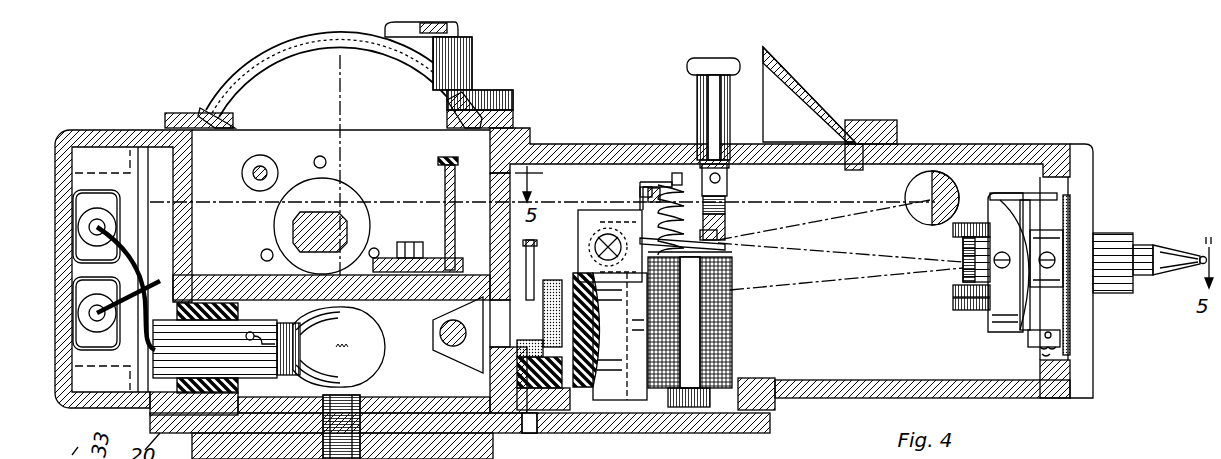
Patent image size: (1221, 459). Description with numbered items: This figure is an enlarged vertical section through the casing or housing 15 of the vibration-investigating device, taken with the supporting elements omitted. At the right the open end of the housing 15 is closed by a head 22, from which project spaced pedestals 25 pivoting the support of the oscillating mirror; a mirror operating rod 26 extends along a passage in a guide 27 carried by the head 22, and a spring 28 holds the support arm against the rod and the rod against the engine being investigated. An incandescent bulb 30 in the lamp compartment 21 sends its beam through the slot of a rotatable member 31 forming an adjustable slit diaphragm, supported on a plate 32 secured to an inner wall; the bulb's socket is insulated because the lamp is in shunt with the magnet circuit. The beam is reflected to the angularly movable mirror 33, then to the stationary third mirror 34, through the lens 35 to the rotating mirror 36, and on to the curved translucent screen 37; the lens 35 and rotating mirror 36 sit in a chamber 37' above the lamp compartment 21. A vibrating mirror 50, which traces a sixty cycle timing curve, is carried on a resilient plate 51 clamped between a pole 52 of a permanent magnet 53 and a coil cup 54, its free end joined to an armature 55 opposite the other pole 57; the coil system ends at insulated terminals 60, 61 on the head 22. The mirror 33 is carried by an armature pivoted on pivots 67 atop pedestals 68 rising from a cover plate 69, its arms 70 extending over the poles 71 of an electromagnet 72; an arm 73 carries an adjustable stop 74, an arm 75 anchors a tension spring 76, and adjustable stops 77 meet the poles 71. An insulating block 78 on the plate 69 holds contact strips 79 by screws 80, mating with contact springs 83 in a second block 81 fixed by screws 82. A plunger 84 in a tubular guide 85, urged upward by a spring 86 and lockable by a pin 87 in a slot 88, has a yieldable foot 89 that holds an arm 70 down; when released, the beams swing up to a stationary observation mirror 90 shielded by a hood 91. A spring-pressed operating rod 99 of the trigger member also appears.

The casing or housing 15 is at (541, 137).
The lamp compartment 21 is at (562, 294).
The head 22 is at (1093, 162).
The pedestals 25 is at (977, 226).
The mirror operating rod 26 is at (1201, 258).
The guide 27 is at (1143, 253).
The spring 28 is at (948, 308).
The incandescent bulb 30 is at (367, 337).
The rotatable member 31 is at (440, 327).
The plate 32 is at (483, 347).
The angularly movable mirror 33 is at (640, 192).
The third mirror 34 is at (928, 176).
The lens 35 is at (447, 185).
The rotating mirror 36 is at (297, 219).
The curved translucent screen 37 is at (359, 75).
The chamber 37' is at (173, 123).
The vibrating mirror 50 is at (965, 248).
The resilient plate 51 is at (967, 267).
The pole 52 is at (1000, 245).
The permanent magnet 53 is at (1013, 332).
The coil cup 54 is at (1010, 240).
The armature 55 is at (1030, 262).
The pole 57 is at (1052, 273).
The insulated terminal 60 is at (1060, 333).
The insulated terminal 61 is at (1053, 247).
The pivots 67 is at (604, 243).
The pedestals 68 is at (593, 210).
The cover plate 69 is at (771, 422).
The arms 70 is at (718, 252).
The poles 71 is at (728, 264).
The electromagnet 72 is at (733, 310).
The arm 73 is at (641, 188).
The adjustable stop 74 is at (668, 180).
The arm 75 is at (654, 188).
The tension spring 76 is at (677, 173).
The adjustable stops 77 is at (712, 258).
The block of insulating material 78 is at (607, 330).
The metal contact strips 79 is at (573, 262).
The screws 80 is at (575, 305).
The second block of insulating material 81 is at (521, 400).
The screws 82 is at (547, 402).
The contact springs 83 is at (543, 316).
The plunger 84 is at (726, 215).
The tubular guide 85 is at (729, 185).
The spring 86 is at (731, 120).
The pin 87 is at (728, 194).
The slot 88 is at (728, 165).
The yieldable foot 89 is at (724, 238).
The stationary observation mirror 90 is at (849, 142).
The hood 91 is at (818, 73).
The spring-pressed operating rod 99 is at (253, 180).